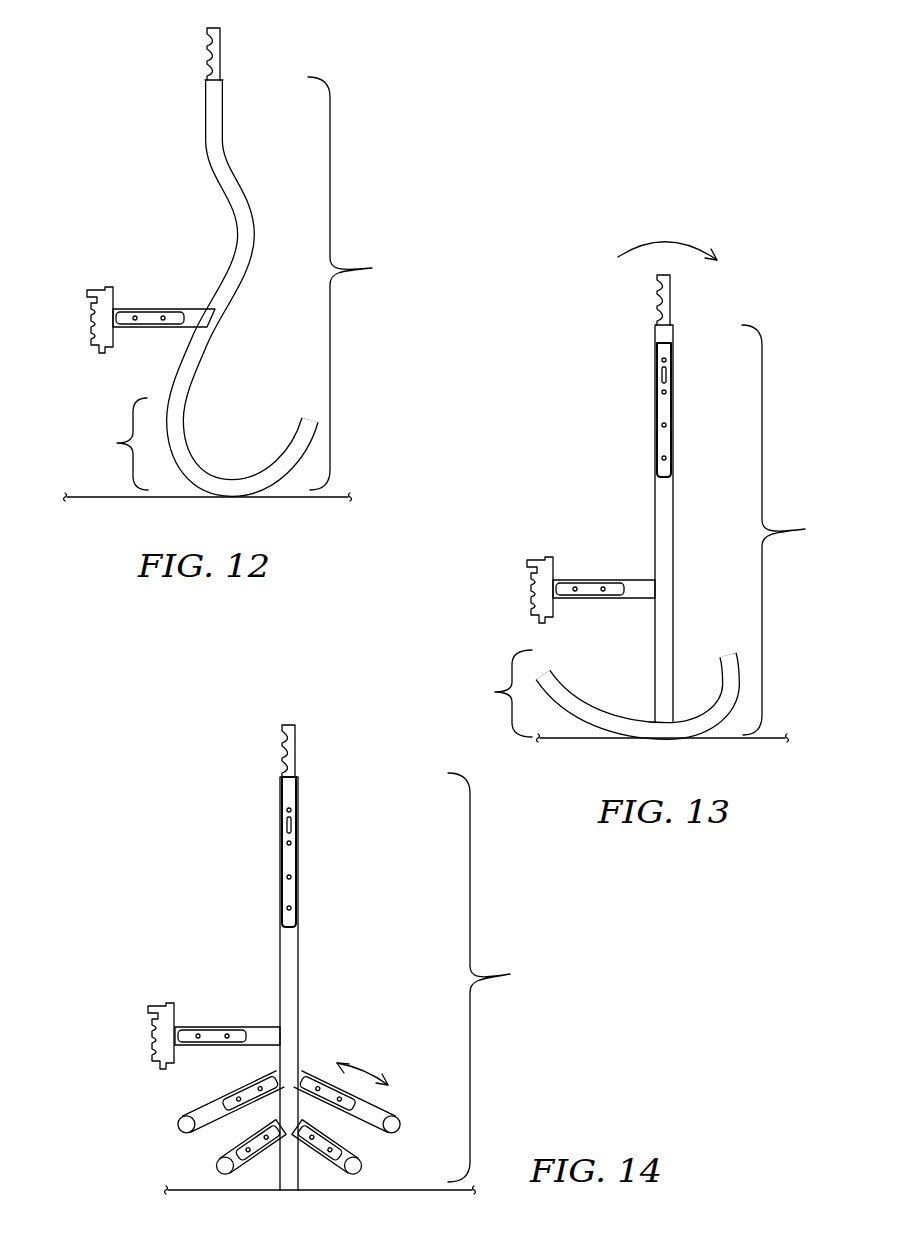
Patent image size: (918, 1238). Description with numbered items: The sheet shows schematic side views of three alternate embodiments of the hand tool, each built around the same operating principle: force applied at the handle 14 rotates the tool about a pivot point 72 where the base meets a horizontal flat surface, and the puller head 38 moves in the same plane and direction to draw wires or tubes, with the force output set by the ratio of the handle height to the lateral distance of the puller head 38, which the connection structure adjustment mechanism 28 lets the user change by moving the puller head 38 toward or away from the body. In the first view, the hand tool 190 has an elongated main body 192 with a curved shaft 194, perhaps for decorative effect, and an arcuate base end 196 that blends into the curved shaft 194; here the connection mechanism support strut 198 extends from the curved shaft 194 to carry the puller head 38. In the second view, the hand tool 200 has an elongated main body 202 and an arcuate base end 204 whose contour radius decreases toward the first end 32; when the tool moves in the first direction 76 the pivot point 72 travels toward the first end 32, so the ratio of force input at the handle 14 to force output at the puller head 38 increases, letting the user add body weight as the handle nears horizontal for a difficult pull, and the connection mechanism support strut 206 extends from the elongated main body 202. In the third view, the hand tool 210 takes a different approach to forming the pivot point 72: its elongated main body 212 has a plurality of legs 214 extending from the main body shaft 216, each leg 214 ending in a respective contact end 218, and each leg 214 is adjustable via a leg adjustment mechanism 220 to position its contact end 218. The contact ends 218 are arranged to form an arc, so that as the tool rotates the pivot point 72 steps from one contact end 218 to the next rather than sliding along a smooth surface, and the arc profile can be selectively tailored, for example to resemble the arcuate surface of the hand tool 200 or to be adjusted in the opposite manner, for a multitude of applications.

In FIG. 12, the handle 14 is at (207, 52).
In FIG. 13, the handle 14 is at (657, 296).
In FIG. 14, the handle 14 is at (280, 746).
In FIG. 12, the hand tool 190 is at (270, 55).
In FIG. 12, the curved shaft 194 is at (232, 153).
In FIG. 12, the elongated main body 192 is at (360, 283).
In FIG. 12, the puller head 38 is at (88, 292).
In FIG. 13, the puller head 38 is at (528, 560).
In FIG. 14, the puller head 38 is at (150, 1005).
In FIG. 12, the connection structure adjustment mechanism 28 is at (164, 319).
In FIG. 13, the connection structure adjustment mechanism 28 is at (604, 590).
In FIG. 14, the connection structure adjustment mechanism 28 is at (202, 1018).
In FIG. 12, the connection mechanism support strut 198 is at (163, 328).
In FIG. 12, the arcuate base end 196 is at (117, 443).
In FIG. 12, the pivot point 72 is at (237, 497).
In FIG. 13, the pivot point 72 is at (667, 740).
In FIG. 14, the pivot point 72 is at (293, 1190).
In FIG. 13, the first direction 76 is at (667, 238).
In FIG. 13, the hand tool 200 is at (720, 303).
In FIG. 13, the elongated main body 202 is at (794, 530).
In FIG. 13, the connection mechanism support strut 206 is at (623, 600).
In FIG. 13, the first end 32 is at (718, 672).
In FIG. 13, the arcuate base end 204 is at (495, 690).
In FIG. 14, the hand tool 210 is at (343, 778).
In FIG. 14, the main body shaft 216 is at (300, 982).
In FIG. 14, the elongated main body 212 is at (499, 977).
In FIG. 14, the leg adjustment mechanism 220 is at (365, 1068).
In FIG. 14, the legs 214 is at (215, 1110).
In FIG. 14, the contact end 218 is at (178, 1130).